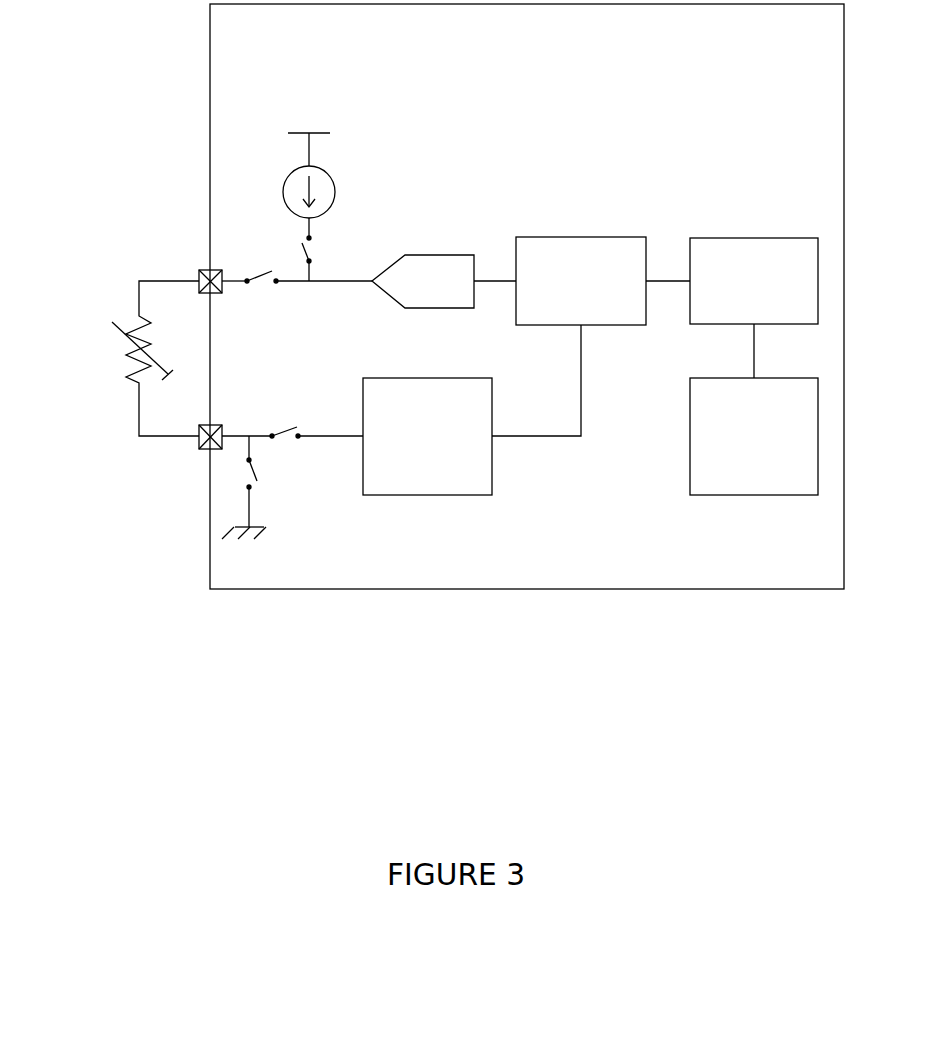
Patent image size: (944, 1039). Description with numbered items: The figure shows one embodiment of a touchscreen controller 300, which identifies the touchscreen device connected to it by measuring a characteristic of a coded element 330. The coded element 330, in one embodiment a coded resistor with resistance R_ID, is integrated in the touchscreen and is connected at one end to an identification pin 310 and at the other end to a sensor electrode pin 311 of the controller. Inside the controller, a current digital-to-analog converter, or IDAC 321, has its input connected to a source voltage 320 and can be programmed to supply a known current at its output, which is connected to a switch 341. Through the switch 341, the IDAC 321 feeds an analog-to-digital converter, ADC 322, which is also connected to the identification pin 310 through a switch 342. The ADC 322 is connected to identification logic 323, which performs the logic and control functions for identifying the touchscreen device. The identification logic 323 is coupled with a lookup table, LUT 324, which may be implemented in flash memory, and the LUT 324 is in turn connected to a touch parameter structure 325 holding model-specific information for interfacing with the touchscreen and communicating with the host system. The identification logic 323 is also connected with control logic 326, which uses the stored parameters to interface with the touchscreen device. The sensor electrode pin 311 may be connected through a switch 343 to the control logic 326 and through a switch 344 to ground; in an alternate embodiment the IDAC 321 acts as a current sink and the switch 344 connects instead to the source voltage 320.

The touchscreen controller 300 is at (537, 55).
The identification pin 310 is at (190, 268).
The sensor electrode pin 311 is at (186, 461).
The source voltage 320 is at (325, 127).
The current digital-to-analog converter (IDAC) 321 is at (284, 194).
The analog-to-digital converter (ADC) 322 is at (462, 305).
The identification logic 323 is at (598, 316).
The lookup table (LUT) 324 is at (770, 305).
The touch parameter structure 325 is at (770, 485).
The control logic 326 is at (445, 458).
The coded element 330 is at (140, 358).
The switch 341 is at (338, 254).
The switch 342 is at (297, 301).
The switch 343 is at (292, 408).
The switch 344 is at (271, 487).